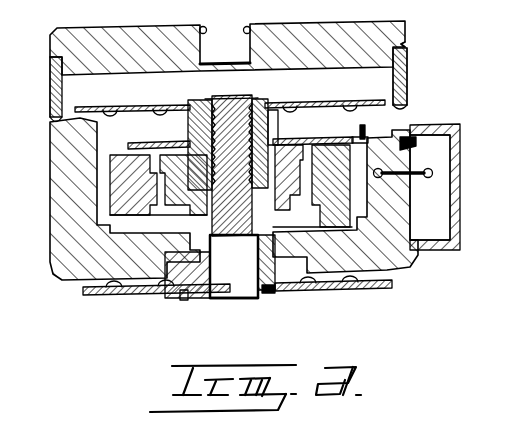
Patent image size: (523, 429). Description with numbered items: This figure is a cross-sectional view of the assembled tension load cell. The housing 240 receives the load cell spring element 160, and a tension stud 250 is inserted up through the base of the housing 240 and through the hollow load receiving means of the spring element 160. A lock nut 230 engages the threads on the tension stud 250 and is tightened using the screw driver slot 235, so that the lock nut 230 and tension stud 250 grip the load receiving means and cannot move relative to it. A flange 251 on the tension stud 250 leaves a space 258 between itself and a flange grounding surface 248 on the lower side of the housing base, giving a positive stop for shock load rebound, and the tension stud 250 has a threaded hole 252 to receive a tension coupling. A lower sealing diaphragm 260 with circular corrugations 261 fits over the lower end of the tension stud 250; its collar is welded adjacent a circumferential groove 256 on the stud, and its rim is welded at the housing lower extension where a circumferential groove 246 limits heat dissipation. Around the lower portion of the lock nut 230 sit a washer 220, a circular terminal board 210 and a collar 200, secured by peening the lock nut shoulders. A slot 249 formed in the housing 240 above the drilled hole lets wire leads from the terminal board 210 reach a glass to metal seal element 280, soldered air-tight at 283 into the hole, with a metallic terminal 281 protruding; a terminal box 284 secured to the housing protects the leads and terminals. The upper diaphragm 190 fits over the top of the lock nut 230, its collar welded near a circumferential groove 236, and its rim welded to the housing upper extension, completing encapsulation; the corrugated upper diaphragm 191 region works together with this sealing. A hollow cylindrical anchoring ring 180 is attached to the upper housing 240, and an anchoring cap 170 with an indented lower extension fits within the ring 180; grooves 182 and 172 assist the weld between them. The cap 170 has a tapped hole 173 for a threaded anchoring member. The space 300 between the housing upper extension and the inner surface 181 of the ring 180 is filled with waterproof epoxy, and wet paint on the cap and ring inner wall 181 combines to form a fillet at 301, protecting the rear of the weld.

The load cell spring element 160 is at (110, 190).
The anchoring cap 170 is at (328, 27).
The groove 172 is at (405, 44).
The tapped hole 173 is at (247, 18).
The anchoring ring 180 is at (50, 100).
The inner surface of ring 181 is at (393, 77).
The groove 182 is at (407, 56).
The upper diaphragm 190 is at (148, 104).
The diaphragm 191 is at (342, 100).
The collar 200 is at (274, 134).
The terminal board 210 is at (134, 142).
The washer 220 is at (283, 138).
The lock nut 230 is at (188, 118).
The screw driver slot 235 is at (240, 94).
The circumferential groove 236 is at (262, 96).
The housing 240 is at (50, 232).
The circumferential groove 246 is at (403, 280).
The flange grounding surface / aperture 248 is at (410, 145).
The slot 249 is at (362, 124).
The tension stud 250 is at (266, 262).
The flange 251 is at (183, 300).
The threaded hole 252 is at (218, 300).
The circumferential groove 256 is at (268, 294).
The space 258 is at (178, 258).
The lower sealing diaphragm 260 is at (60, 296).
The circular corrugations 261 is at (354, 292).
The glass to metal seal element 280 is at (392, 178).
The metallic terminal 281 is at (380, 169).
The solder joint 283 is at (406, 208).
The terminal box 284 is at (438, 125).
The space 300 is at (52, 120).
The fillet 301 is at (50, 91).